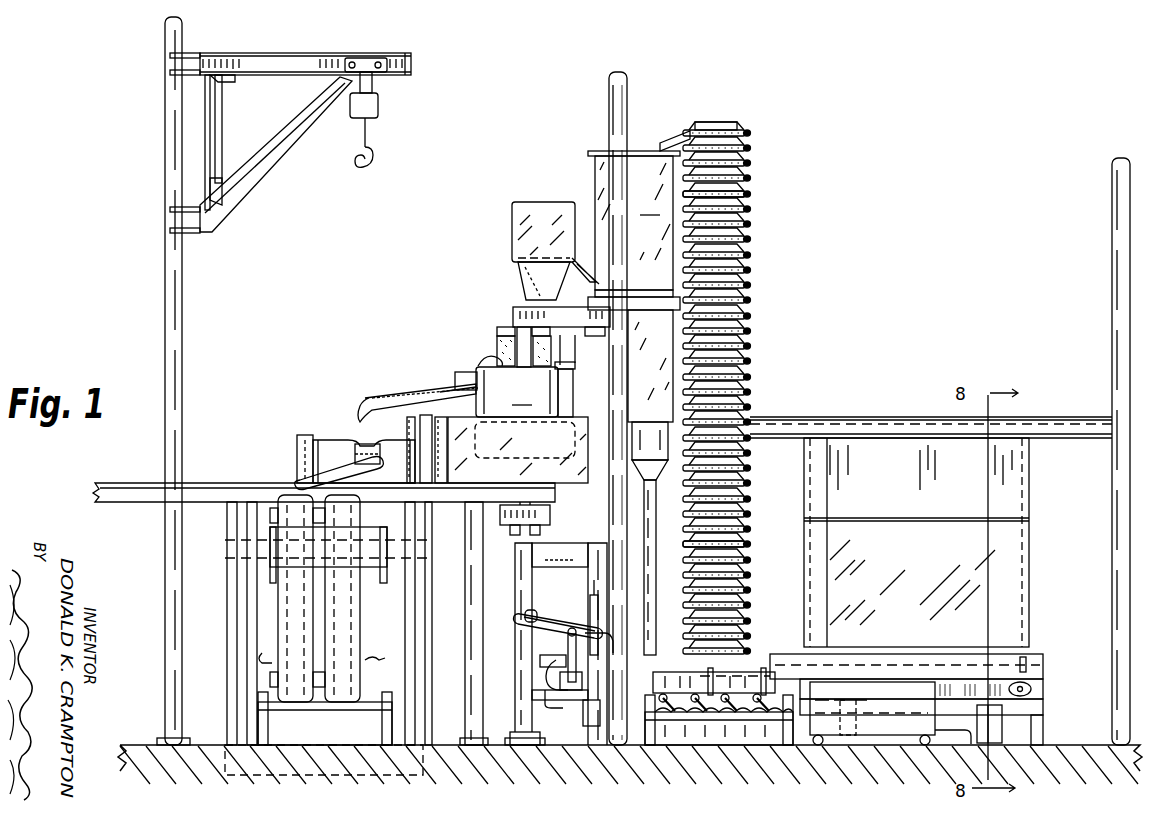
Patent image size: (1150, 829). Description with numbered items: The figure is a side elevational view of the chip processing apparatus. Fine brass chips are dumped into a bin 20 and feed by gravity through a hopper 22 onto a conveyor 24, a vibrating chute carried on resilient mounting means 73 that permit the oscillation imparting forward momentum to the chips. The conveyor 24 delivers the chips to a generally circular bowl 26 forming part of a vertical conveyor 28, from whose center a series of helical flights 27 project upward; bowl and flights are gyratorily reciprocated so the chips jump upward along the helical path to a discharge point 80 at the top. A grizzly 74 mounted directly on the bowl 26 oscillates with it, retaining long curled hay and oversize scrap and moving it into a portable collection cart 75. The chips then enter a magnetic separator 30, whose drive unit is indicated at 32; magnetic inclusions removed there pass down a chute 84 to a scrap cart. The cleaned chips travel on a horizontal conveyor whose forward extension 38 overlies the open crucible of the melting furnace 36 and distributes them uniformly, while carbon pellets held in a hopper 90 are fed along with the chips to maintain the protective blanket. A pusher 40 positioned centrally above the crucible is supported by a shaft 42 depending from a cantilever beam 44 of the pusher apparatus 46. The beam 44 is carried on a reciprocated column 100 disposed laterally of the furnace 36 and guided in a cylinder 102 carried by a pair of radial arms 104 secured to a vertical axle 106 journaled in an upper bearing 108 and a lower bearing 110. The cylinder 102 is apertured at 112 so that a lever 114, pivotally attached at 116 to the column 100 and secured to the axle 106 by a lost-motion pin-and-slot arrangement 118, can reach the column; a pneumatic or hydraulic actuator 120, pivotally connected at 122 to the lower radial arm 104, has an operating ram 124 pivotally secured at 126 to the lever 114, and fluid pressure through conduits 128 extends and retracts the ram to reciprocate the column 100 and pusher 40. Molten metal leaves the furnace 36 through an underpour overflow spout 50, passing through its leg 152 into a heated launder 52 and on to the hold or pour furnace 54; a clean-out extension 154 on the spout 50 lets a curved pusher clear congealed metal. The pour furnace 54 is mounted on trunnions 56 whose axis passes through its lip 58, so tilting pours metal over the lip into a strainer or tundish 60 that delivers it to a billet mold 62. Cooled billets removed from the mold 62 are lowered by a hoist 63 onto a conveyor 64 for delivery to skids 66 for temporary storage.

The bin 20 is at (1034, 546).
The hopper 22 is at (1006, 652).
The conveyor 24 is at (1054, 676).
The bowl 26 is at (774, 684).
The helical flights 27 is at (750, 198).
The vertical conveyor 28 is at (759, 298).
The magnetic separator 30 is at (634, 286).
The drive unit 32 is at (586, 266).
The melting furnace 36 is at (525, 389).
The forward extension 38 is at (494, 332).
The pusher 40 is at (489, 354).
The shaft 42 is at (483, 341).
The cantilever beam 44 is at (514, 308).
The pusher apparatus 46 is at (509, 584).
The underpour overflow feed spout 50 is at (455, 377).
The launder 52 is at (382, 401).
The hold or pour furnace 54 is at (314, 431).
The trunnions 56 is at (300, 437).
The lip 58 is at (360, 446).
The strainer or tundish 60 is at (295, 460).
The billet mold 62 is at (299, 640).
The hoist 63 is at (366, 128).
The conveyor 64 is at (262, 580).
The skids 66 is at (378, 728).
The resilient mounting means 73 is at (1030, 689).
The grizzly 74 is at (778, 662).
The collection cart 75 is at (893, 734).
The discharge point 80 is at (675, 134).
The chute 84 is at (658, 506).
The hopper 90 is at (512, 238).
The reciprocated column 100 is at (593, 410).
The cylinder 102 is at (593, 580).
The radial arms 104 is at (515, 702).
The axle 106 is at (538, 655).
The upper bearing 108 is at (436, 540).
The lower bearing 110 is at (528, 748).
The aperture 112 is at (596, 595).
The lever 114 is at (537, 614).
The pivotal attachment 116 is at (614, 637).
The pin-and-slot arrangement 118 is at (522, 616).
The actuator 120 is at (554, 688).
The pivotal connection 122 is at (562, 696).
The operating ram 124 is at (552, 666).
The pivotal connection 126 is at (571, 629).
The conduits 128 is at (548, 718).
The leg 152 is at (439, 386).
The clean-out extension 154 is at (477, 360).